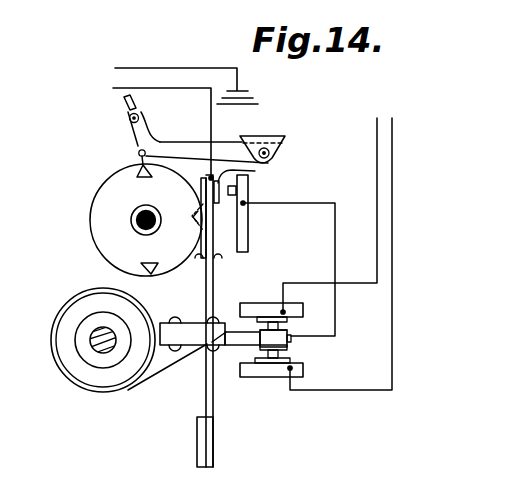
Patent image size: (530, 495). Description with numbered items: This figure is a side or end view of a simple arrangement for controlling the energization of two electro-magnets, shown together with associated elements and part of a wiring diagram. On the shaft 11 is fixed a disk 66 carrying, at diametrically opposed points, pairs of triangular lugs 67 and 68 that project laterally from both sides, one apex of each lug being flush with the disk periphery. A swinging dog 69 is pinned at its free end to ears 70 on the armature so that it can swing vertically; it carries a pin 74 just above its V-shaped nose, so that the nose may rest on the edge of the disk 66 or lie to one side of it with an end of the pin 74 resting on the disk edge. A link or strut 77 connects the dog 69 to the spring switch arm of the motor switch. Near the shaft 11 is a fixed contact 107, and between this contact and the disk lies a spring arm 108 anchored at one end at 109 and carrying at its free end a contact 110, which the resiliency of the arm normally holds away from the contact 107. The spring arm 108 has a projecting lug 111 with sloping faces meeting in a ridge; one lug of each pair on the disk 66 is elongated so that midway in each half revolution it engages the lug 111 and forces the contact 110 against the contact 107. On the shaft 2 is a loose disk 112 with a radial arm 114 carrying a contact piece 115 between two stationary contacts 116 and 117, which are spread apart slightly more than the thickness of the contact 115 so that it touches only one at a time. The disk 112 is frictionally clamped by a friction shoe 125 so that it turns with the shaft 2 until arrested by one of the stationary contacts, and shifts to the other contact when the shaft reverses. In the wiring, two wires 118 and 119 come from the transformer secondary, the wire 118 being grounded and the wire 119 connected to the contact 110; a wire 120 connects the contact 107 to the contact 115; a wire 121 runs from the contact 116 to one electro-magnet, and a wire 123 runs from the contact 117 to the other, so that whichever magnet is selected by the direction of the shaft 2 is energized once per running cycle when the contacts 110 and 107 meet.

The shaft 2 is at (95, 335).
The shaft 11 is at (134, 219).
The disk 66 is at (103, 200).
The lugs 67 is at (136, 172).
The lugs 68 is at (153, 268).
The swinging dog 69 is at (178, 150).
The ears 70 is at (285, 147).
The pin 74 is at (138, 148).
The link or strut 77 is at (124, 101).
The fixed contact 107 is at (248, 191).
The spring arm 108 is at (213, 280).
The anchor 109 is at (212, 450).
The contact 110 is at (255, 171).
The projecting lug 111 is at (195, 214).
The loose disk 112 is at (69, 376).
The radial arm 114 is at (165, 363).
The contact piece 115 is at (300, 340).
The stationary contact 116 is at (318, 303).
The stationary contact 117 is at (290, 356).
The wire 118 is at (185, 54).
The wire 119 is at (133, 88).
The wire 120 is at (307, 204).
The wire 121 is at (377, 128).
The wire 123 is at (392, 322).
The friction disk or shoe 125 is at (103, 378).